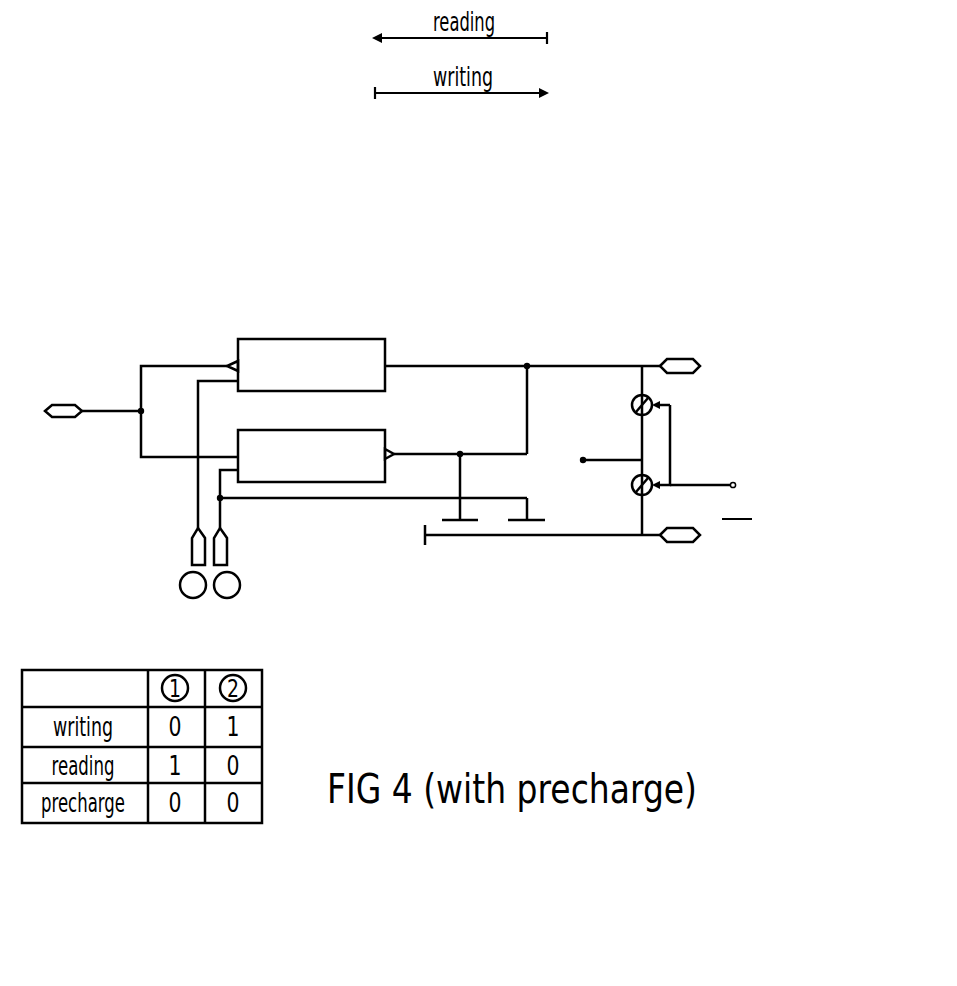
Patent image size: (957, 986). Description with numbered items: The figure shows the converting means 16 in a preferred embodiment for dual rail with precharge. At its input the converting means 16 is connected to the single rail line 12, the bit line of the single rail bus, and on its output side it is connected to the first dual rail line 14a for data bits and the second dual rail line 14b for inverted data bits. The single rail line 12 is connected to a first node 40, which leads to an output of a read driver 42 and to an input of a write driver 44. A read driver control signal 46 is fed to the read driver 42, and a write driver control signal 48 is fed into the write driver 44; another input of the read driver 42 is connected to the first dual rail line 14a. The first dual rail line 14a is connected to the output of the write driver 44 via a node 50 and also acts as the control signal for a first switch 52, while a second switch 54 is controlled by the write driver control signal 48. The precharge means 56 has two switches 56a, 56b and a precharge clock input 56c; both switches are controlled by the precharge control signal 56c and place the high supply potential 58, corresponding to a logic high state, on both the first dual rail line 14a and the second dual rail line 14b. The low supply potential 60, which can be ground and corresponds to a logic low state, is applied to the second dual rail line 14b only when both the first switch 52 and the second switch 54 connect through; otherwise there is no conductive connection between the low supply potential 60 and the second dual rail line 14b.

The single rail line 12 is at (53, 405).
The first dual rail line 14a is at (687, 358).
The second dual rail line 14b is at (690, 542).
The converting means 16 is at (482, 238).
The first node 40 is at (141, 411).
The read driver 42 is at (387, 339).
The write driver 44 is at (387, 430).
The read driver control signal 46 is at (191, 553).
The write driver control signal 48 is at (229, 555).
The node 50 is at (527, 366).
The first switch 52 is at (468, 563).
The second switch 54 is at (533, 566).
The precharge means 56 is at (640, 325).
The switch of precharge means 56a is at (632, 405).
The switch of precharge means 56b is at (633, 488).
The precharge clock input PCH 56c is at (735, 488).
The potential VDD 58 is at (583, 460).
The potential VSS 60 is at (425, 530).